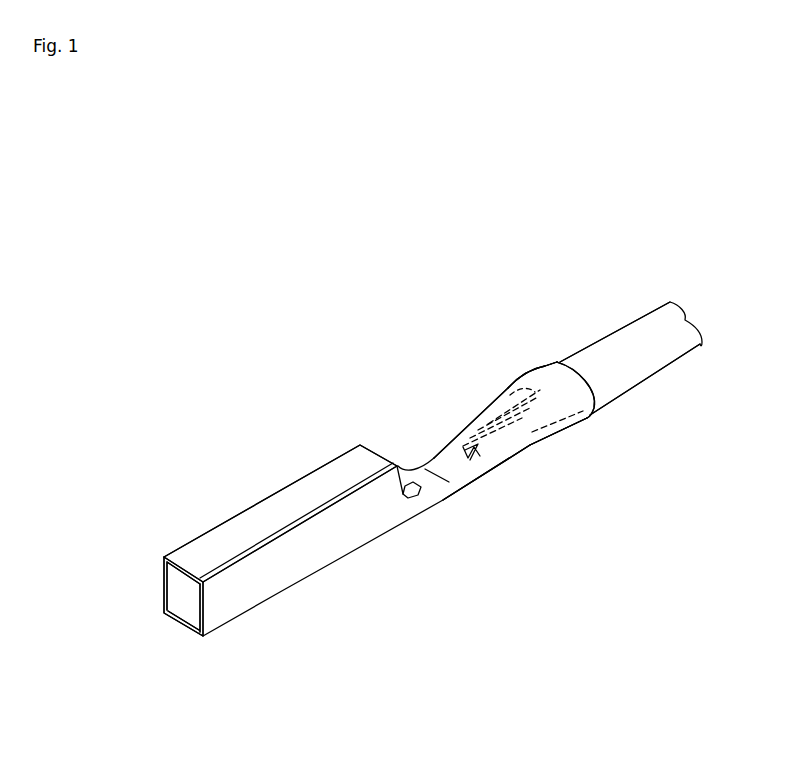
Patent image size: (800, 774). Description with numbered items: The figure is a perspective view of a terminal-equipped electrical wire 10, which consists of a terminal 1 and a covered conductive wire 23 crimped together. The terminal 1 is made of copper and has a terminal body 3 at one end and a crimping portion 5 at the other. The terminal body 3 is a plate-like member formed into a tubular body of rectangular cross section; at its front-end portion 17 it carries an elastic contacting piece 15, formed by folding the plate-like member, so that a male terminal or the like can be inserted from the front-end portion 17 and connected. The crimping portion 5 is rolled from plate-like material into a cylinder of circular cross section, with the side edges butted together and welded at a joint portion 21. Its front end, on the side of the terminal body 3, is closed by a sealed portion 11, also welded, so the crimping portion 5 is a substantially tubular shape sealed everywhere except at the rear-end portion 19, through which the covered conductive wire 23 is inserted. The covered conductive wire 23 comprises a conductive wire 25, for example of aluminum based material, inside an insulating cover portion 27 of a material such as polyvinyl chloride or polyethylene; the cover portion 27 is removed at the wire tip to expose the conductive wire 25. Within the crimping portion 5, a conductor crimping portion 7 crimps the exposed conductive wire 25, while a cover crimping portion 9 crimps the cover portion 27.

The terminal 1 is at (327, 420).
The terminal body 3 is at (173, 553).
The crimping portion 5 is at (567, 603).
The conductor crimping portion 7 is at (491, 468).
The cover crimping portion 9 is at (540, 441).
The terminal-equipped electrical wire 10 is at (437, 187).
The sealed portion 11 is at (428, 488).
The elastic contacting piece 15 is at (185, 603).
The front-end portion 17 is at (175, 582).
The rear-end portion 19 is at (590, 388).
The joint portion 21 is at (552, 363).
The covered conductive wire 23 is at (683, 287).
The conductive wire 25 is at (497, 423).
The cover portion 27 is at (653, 372).